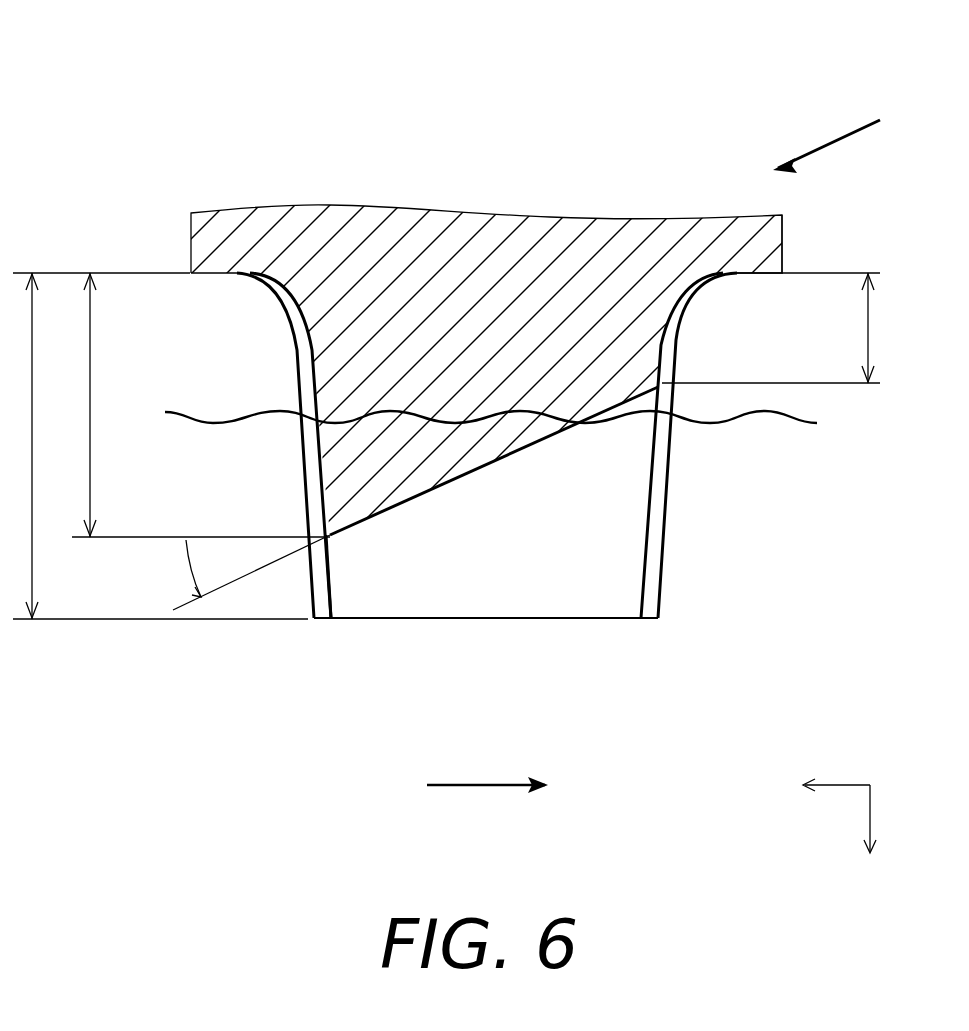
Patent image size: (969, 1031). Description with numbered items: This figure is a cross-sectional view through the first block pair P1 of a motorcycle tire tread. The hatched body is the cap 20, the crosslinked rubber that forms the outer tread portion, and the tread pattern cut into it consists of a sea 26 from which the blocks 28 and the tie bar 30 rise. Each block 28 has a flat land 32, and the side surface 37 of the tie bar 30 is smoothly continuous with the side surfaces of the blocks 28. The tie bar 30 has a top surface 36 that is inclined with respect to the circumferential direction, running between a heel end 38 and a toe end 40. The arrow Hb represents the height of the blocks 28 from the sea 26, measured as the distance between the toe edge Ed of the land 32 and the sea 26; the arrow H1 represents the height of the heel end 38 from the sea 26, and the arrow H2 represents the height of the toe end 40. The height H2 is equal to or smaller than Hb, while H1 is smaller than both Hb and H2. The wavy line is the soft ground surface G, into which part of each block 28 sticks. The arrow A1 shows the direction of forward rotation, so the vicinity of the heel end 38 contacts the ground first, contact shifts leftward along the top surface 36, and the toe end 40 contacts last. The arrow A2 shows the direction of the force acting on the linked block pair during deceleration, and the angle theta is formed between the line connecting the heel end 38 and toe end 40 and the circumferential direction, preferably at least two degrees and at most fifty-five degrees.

The cap 20 is at (230, 240).
The tie bar 30 is at (508, 330).
The sea 26 is at (748, 278).
The side surface 37 is at (322, 470).
The heel end 38 is at (657, 378).
The top surface 36 is at (483, 470).
The land 32 is at (427, 620).
The block 28 is at (545, 575).
The toe end 40 is at (334, 540).
The toe edge Ed is at (313, 625).
The ground surface G is at (214, 423).
The first block pair P1 is at (163, 44).
The direction of forward rotation A1 is at (487, 774).
The direction of force during deceleration A2 is at (826, 143).
The height of heel end H1 is at (771, 328).
The height of toe end H2 is at (201, 405).
The height of blocks Hb is at (160, 446).
The angle theta is at (249, 572).